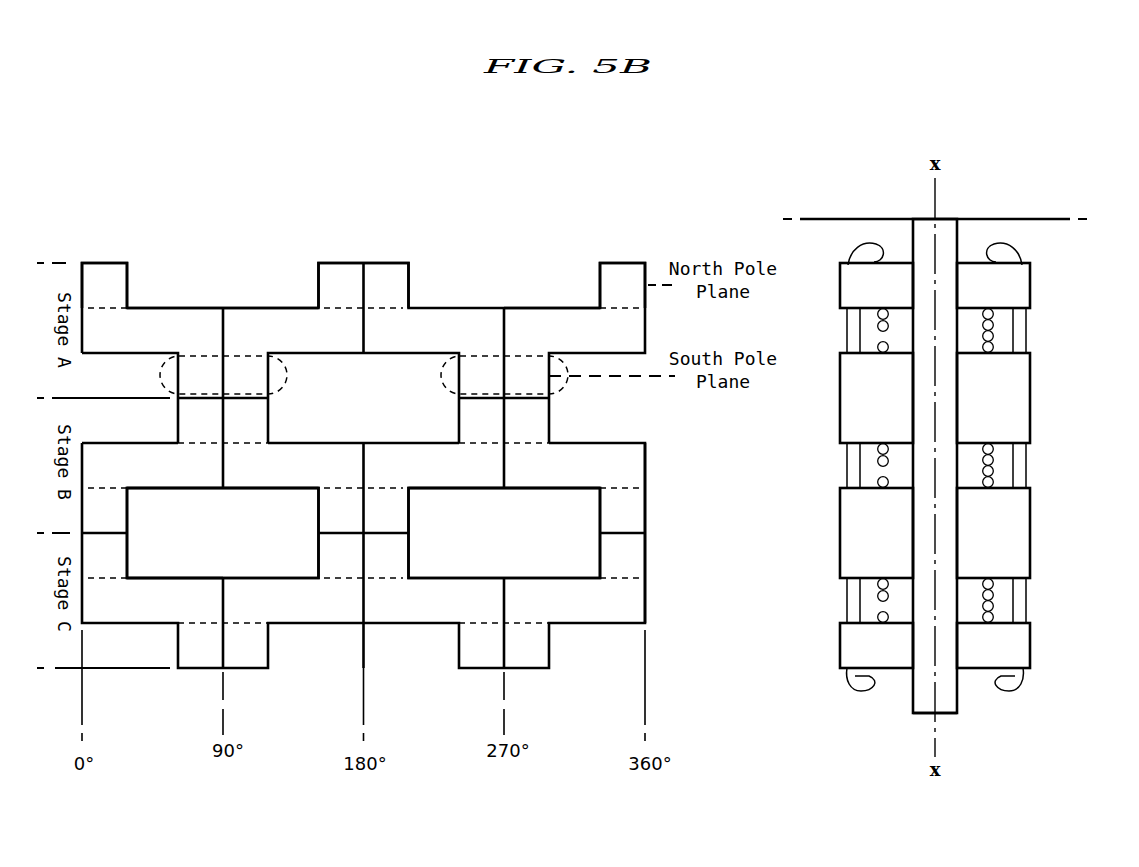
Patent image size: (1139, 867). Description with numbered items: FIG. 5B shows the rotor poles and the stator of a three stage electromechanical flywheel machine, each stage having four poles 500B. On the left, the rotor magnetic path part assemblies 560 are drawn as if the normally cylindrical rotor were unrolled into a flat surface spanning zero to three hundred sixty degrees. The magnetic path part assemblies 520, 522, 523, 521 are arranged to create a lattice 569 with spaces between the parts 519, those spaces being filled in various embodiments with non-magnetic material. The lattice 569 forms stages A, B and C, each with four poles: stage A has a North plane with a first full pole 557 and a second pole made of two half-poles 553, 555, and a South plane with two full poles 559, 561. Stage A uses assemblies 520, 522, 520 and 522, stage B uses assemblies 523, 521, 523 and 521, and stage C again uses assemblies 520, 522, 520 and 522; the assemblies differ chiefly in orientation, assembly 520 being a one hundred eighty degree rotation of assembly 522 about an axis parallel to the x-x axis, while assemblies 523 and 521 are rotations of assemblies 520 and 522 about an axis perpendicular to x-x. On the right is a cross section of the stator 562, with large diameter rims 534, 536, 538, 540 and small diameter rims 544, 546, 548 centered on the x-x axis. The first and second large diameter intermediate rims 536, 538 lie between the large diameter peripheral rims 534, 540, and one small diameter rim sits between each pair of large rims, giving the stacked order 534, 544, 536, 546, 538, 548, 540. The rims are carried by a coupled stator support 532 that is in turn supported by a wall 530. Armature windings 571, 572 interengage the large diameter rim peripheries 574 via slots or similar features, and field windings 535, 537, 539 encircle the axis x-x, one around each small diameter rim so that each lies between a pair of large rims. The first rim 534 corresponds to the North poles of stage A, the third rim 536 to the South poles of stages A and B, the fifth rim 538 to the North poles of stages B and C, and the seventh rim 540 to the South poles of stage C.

The four poles 500B is at (736, 190).
The rotor magnetic path part assemblies 560 is at (236, 250).
The half-pole 553 is at (77, 258).
The first full pole 557 is at (312, 258).
The half-pole 555 is at (592, 258).
The spaces between the parts 519 is at (377, 462).
The magnetic path part assembly 520 is at (303, 459).
The magnetic path part assembly 522 is at (426, 459).
The magnetic path part assembly 523 is at (315, 471).
The magnetic path part assembly 521 is at (426, 471).
The full pole 559 is at (289, 389).
The full pole 561 is at (440, 389).
The lattice 569 is at (674, 587).
The wall 530 is at (885, 219).
The stator support 532 is at (950, 243).
The large diameter rim periphery 574 is at (846, 264).
The large diameter peripheral rim 534 is at (1017, 283).
The field winding 535 is at (996, 346).
The first large diameter intermediate rim 536 is at (1017, 392).
The field winding 537 is at (996, 479).
The second large diameter intermediate rim 538 is at (1017, 529).
The field winding 539 is at (996, 614).
The small diameter rim 544 is at (900, 326).
The small diameter rim 546 is at (900, 459).
The small diameter rim 548 is at (900, 594).
The large diameter peripheral rim 540 is at (861, 650).
The armature winding 571 is at (856, 692).
The armature winding 572 is at (1016, 692).
The stator 562 is at (888, 706).